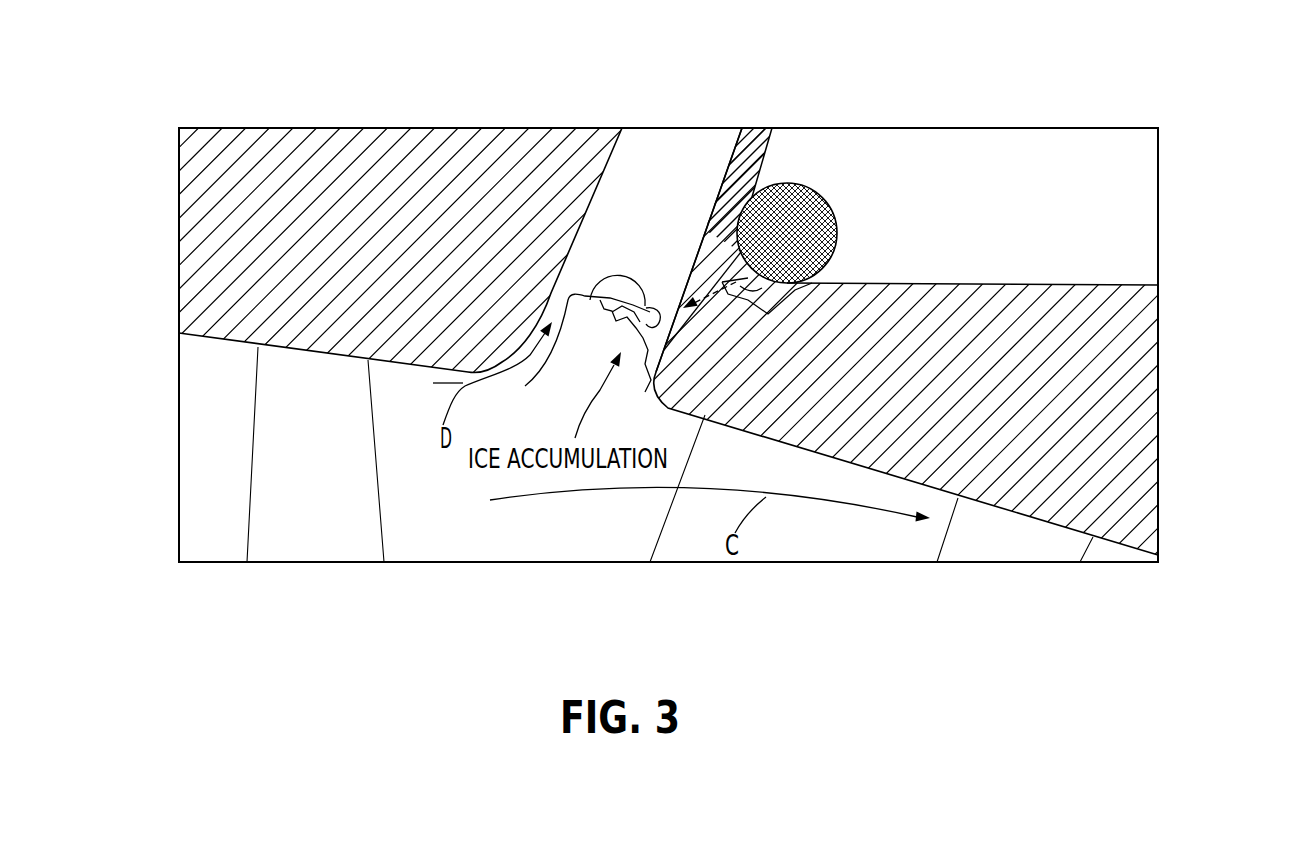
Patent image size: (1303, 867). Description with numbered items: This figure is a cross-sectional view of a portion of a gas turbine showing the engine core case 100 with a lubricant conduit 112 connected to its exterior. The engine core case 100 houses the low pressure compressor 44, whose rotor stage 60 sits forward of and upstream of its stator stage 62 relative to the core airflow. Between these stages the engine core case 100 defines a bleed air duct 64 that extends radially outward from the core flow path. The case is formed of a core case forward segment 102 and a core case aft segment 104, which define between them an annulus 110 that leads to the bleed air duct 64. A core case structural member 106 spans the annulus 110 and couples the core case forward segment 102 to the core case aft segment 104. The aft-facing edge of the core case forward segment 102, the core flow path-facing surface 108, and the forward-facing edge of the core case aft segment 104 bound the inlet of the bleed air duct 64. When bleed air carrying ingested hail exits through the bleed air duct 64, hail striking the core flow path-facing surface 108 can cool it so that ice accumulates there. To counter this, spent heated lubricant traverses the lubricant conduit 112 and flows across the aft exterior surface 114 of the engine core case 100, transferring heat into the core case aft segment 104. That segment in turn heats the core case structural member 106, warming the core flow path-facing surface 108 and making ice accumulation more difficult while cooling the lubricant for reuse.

The low pressure compressor 44 is at (479, 611).
The rotor stage 60 is at (285, 535).
The stator stage 62 is at (813, 540).
The bleed air duct 64 is at (655, 226).
The engine core case 100 is at (627, 111).
The core case forward segment 102 is at (200, 256).
The core case aft segment 104 is at (1132, 473).
The core case structural member 106 is at (716, 142).
The core flow path-facing surface 108 is at (543, 368).
The annulus 110 is at (613, 349).
The lubricant conduit 112 is at (803, 181).
The aft exterior surface 114 is at (812, 288).